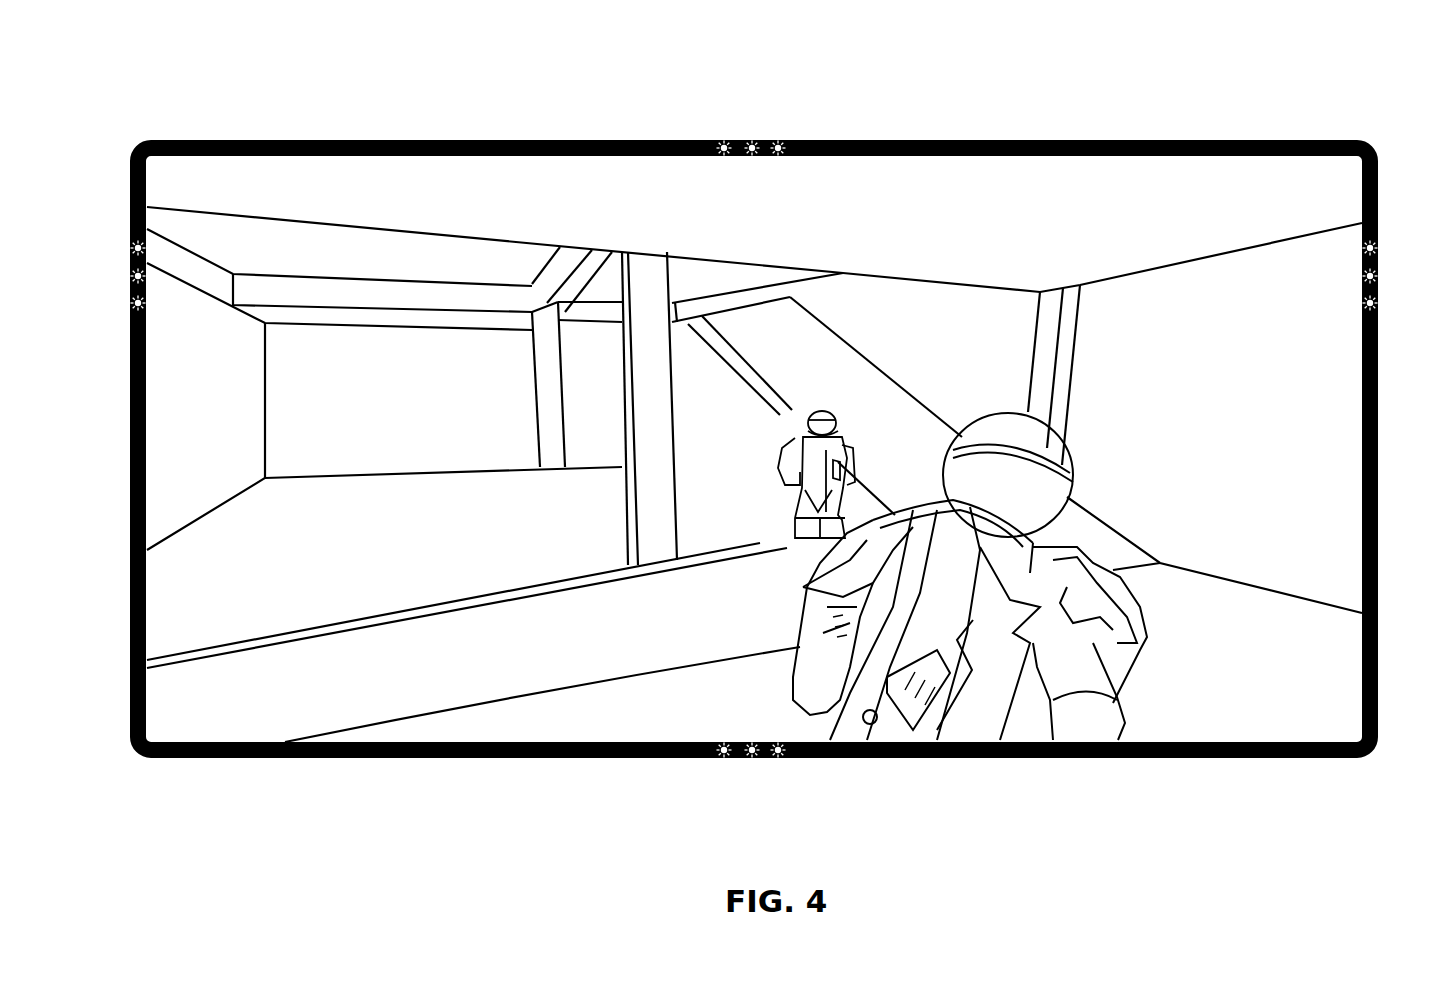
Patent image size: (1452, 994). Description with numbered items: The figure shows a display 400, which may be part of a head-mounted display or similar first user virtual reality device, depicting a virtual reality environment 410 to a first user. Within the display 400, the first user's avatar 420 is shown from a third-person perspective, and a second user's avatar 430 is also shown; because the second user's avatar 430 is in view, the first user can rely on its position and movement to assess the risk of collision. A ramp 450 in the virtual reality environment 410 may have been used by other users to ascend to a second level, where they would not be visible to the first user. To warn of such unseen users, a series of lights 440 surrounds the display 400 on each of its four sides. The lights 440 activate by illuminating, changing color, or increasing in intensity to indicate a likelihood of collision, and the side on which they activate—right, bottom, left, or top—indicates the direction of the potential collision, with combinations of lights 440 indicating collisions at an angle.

The display 400 is at (1247, 79).
The virtual reality environment 410 is at (1312, 533).
The first user's avatar 420 is at (1122, 663).
The second user's avatar 430 is at (838, 428).
The lights 440 is at (129, 275).
The ramp 450 is at (850, 354).